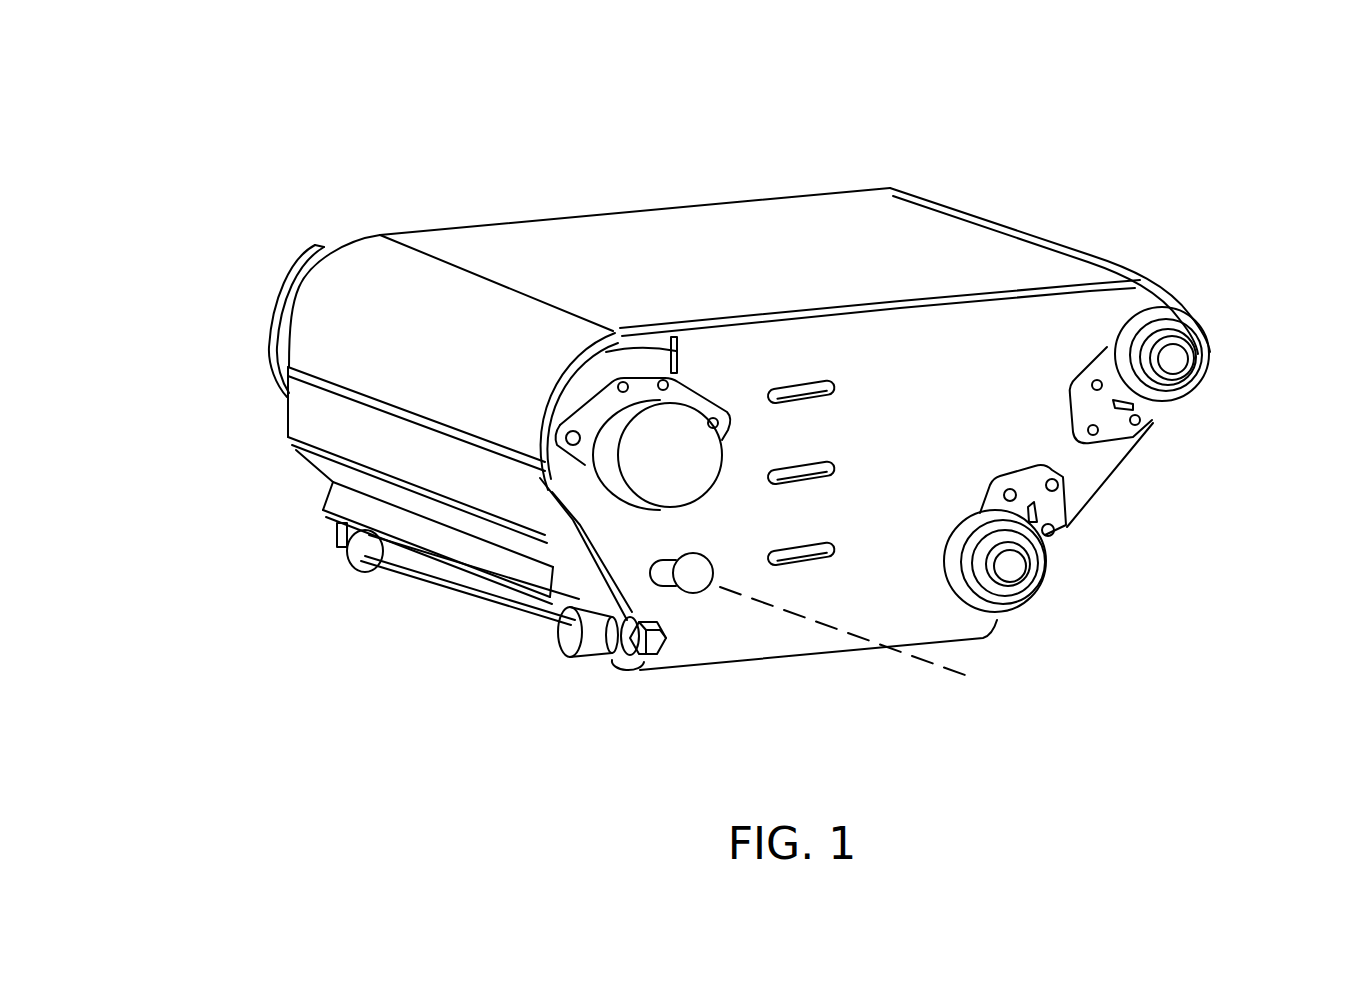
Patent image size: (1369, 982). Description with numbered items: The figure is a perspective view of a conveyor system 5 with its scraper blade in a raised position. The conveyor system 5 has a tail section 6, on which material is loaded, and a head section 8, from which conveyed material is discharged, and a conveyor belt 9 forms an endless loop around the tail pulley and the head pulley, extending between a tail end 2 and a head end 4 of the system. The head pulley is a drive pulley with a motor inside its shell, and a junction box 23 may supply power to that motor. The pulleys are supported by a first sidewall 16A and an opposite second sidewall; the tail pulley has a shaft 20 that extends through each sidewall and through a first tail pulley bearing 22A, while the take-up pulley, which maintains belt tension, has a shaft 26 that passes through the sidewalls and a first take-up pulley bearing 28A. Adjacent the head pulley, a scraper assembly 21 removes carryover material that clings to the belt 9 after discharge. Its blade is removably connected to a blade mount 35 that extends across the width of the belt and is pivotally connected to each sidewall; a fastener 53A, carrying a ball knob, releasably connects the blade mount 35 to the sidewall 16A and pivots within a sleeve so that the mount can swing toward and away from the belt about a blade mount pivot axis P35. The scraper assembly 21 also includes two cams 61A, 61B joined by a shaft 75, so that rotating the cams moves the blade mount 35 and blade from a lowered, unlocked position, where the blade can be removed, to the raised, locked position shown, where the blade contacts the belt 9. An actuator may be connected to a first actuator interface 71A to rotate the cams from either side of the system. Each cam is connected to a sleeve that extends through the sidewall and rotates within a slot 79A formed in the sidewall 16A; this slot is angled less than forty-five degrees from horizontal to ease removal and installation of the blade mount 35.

The tail end 2 is at (1177, 297).
The head end 4 is at (335, 310).
The conveyor system 5 is at (339, 744).
The tail section 6 is at (866, 160).
The head section 8 is at (348, 200).
The conveyor belt 9 is at (624, 238).
The first sidewall 16A is at (818, 637).
The shaft 20 is at (1172, 358).
The scraper assembly 21 is at (302, 539).
The first tail pulley bearing 22A is at (1185, 317).
The junction box 23 is at (673, 463).
The shaft 26 is at (1013, 567).
The first take-up pulley bearing 28A is at (1010, 528).
The blade mount 35 is at (347, 497).
The fastener 53A is at (702, 580).
The cam 61A is at (573, 632).
The cam 61B is at (363, 545).
The first actuator interface 71A is at (653, 650).
The shaft 75 is at (437, 582).
The slot 79A is at (621, 685).
The blade mount pivot axis P35 is at (957, 677).